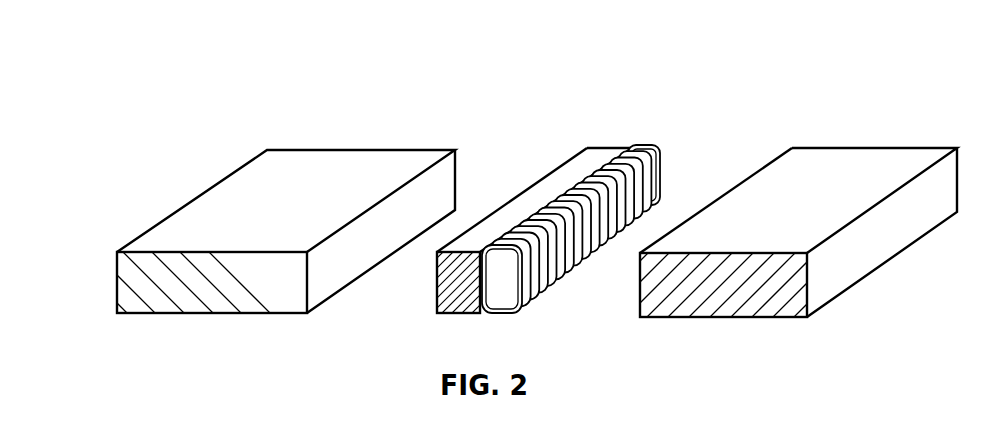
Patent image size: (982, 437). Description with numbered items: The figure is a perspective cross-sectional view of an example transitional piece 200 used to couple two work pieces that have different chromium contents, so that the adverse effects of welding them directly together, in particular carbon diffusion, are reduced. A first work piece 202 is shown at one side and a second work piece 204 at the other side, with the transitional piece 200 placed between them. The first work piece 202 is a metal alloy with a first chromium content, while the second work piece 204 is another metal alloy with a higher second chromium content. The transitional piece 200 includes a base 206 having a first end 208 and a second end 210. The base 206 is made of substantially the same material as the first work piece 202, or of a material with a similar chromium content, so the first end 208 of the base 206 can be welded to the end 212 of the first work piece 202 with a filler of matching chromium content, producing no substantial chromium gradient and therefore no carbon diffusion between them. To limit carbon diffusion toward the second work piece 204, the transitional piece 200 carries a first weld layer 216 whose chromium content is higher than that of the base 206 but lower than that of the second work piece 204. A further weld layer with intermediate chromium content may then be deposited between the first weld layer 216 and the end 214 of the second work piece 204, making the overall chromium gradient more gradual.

The transitional piece 200 is at (140, 40).
The first work piece 202 is at (240, 180).
The second work piece 204 is at (850, 160).
The base 206 is at (573, 167).
The first end 208 is at (518, 192).
The second end 210 is at (615, 184).
The end of the first work piece 212 is at (387, 193).
The end of the second work piece 214 is at (785, 148).
The first weld layer 216 is at (660, 172).